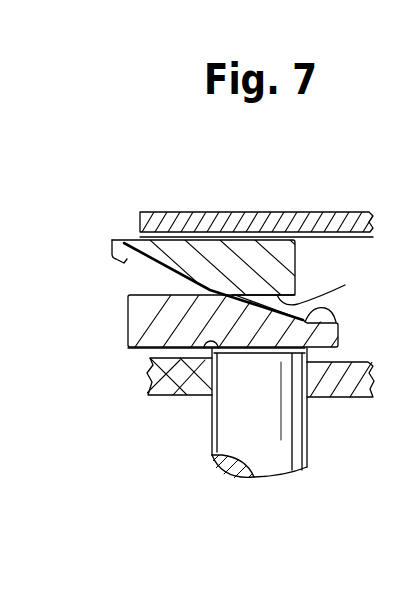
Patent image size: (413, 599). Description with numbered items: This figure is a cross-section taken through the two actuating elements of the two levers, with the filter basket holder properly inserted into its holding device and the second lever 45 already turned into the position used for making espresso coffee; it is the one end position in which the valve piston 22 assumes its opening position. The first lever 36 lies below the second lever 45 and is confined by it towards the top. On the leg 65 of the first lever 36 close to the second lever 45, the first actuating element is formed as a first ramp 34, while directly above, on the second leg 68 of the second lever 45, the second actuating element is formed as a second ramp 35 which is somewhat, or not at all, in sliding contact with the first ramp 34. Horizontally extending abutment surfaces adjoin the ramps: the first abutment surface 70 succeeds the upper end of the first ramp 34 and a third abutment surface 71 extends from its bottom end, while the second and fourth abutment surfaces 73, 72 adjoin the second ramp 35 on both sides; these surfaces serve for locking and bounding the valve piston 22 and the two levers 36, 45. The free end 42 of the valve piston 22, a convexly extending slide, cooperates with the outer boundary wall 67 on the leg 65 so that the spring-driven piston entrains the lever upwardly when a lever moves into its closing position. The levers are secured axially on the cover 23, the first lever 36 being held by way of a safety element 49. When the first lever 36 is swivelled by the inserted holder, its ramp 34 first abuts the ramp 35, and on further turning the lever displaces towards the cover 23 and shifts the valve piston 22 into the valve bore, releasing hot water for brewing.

The valve piston 22 is at (289, 457).
The cover 23 is at (326, 399).
The first ramp 34 is at (330, 309).
The second ramp 35 is at (178, 283).
The first lever 36 is at (126, 345).
The free end of the valve piston 42 is at (208, 337).
The second lever 45 is at (136, 237).
The safety element 49 is at (328, 215).
The leg 65 is at (135, 315).
The outer boundary wall 67 is at (130, 348).
The second leg 68 is at (273, 258).
The first abutment surface 70 is at (338, 331).
The third abutment surface 71 is at (128, 293).
The fourth abutment surface 72 is at (122, 266).
The second abutment surface 73 is at (345, 285).